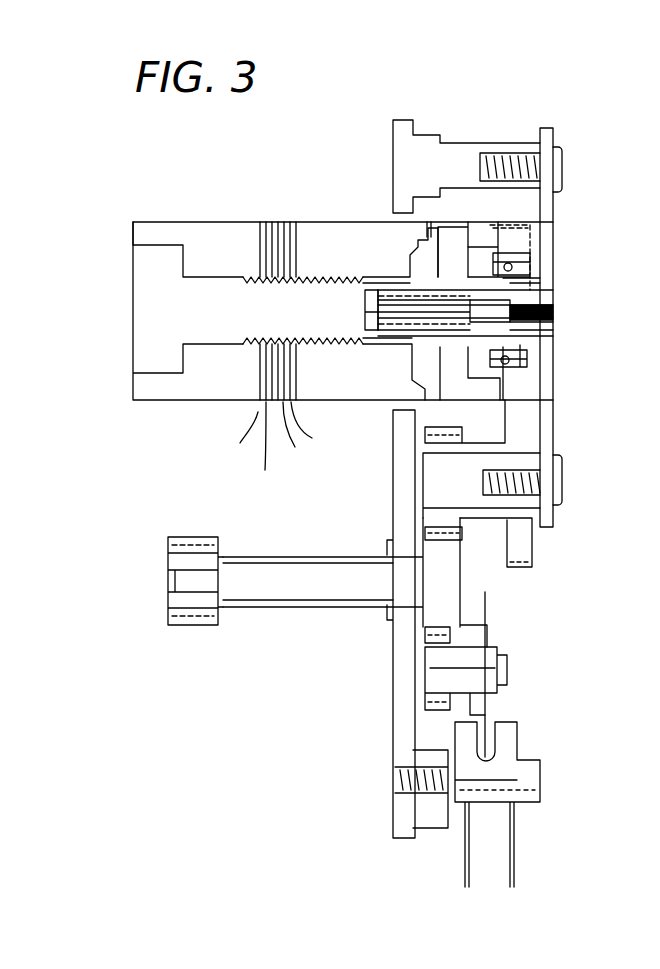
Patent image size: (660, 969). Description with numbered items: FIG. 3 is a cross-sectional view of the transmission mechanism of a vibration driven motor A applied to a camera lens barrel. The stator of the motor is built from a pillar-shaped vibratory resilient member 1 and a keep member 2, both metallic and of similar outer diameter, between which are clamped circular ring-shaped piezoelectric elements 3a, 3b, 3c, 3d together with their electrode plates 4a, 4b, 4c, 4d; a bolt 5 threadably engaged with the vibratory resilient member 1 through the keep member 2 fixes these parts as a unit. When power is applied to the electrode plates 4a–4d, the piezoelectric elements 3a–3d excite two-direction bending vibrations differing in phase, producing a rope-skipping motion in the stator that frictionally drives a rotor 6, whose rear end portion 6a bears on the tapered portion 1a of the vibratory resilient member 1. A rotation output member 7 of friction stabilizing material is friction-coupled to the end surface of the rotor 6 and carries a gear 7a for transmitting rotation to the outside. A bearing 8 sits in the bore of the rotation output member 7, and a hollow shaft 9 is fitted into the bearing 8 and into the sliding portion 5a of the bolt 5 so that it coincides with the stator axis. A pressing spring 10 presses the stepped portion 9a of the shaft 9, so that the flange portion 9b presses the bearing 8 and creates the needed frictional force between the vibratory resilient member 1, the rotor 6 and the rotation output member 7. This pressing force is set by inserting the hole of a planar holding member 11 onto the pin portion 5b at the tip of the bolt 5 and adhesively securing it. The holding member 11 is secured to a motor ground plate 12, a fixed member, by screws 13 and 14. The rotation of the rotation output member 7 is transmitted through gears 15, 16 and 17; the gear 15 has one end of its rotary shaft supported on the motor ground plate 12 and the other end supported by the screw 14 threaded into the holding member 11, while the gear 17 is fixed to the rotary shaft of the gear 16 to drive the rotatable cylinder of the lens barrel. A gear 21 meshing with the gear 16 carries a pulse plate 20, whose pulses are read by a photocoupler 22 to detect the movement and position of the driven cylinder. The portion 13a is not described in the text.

The vibratory resilient member 1 is at (372, 405).
The tapered portion 1a is at (410, 287).
The keep member 2 is at (202, 402).
The piezoelectric element 3a is at (291, 228).
The piezoelectric element 3b is at (282, 228).
The piezoelectric element 3c is at (270, 228).
The piezoelectric element 3d is at (262, 232).
The electrode plate 4a is at (312, 427).
The electrode plate 4b is at (298, 438).
The electrode plate 4c is at (265, 449).
The electrode plate 4d is at (260, 402).
The bolt 5 is at (143, 277).
The sliding portion 5a is at (335, 265).
The pin portion 5b is at (557, 324).
The rotor 6 is at (455, 233).
The rear end portion 6a is at (410, 217).
The rotation output member 7 is at (478, 253).
The gear 7a is at (520, 220).
The bearing 8 is at (514, 257).
The hollow shaft 9 is at (540, 283).
The stepped portion 9a is at (370, 287).
The flange portion 9b is at (540, 367).
The pressing spring 10 is at (545, 300).
The holding member 11 is at (542, 255).
The motor ground plate 12 is at (393, 689).
The screw 13 is at (558, 160).
The shaft end 13a is at (553, 310).
The screw 14 is at (562, 481).
The gear 15 is at (517, 422).
The gear 16 is at (447, 572).
The gear 17 is at (197, 603).
The pulse plate 20 is at (487, 613).
The gear 21 is at (500, 687).
The photocoupler 22 is at (507, 745).
The vibration driven motor A is at (133, 324).